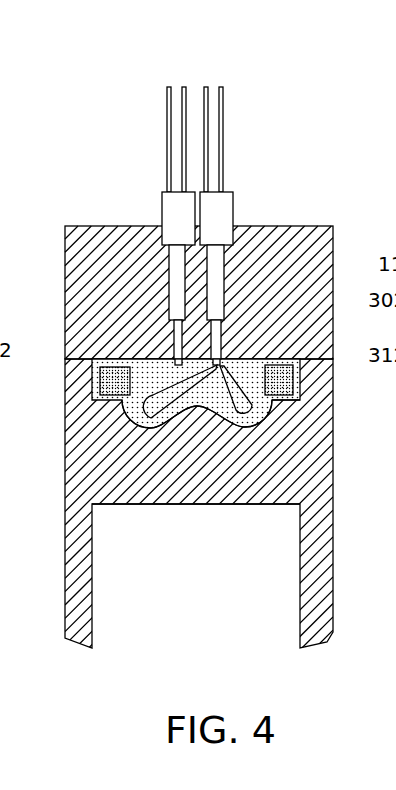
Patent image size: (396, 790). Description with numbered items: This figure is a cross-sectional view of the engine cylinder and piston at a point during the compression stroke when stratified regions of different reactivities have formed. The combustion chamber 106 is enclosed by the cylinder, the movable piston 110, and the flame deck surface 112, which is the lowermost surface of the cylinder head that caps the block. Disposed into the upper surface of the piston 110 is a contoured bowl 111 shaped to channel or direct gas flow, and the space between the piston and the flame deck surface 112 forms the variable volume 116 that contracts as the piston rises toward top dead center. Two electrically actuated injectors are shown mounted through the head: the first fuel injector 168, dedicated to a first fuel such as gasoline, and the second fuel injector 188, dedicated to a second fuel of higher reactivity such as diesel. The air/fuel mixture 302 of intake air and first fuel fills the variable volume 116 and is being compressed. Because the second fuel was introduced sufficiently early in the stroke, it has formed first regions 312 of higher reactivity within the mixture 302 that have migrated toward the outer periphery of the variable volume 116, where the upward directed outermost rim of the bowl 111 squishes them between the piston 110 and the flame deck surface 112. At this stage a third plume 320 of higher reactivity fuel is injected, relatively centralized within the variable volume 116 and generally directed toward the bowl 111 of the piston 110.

The combustion chamber 106 is at (128, 610).
The piston 110 is at (225, 504).
The bowl 111 is at (268, 403).
The flame deck surface 112 is at (237, 373).
The variable volume 116 is at (156, 362).
The first fuel injector 168 is at (177, 206).
The second fuel injector 188 is at (223, 208).
The air/fuel mixture 302 is at (143, 378).
The first regions 312 is at (112, 378).
The third plume 320 is at (241, 428).